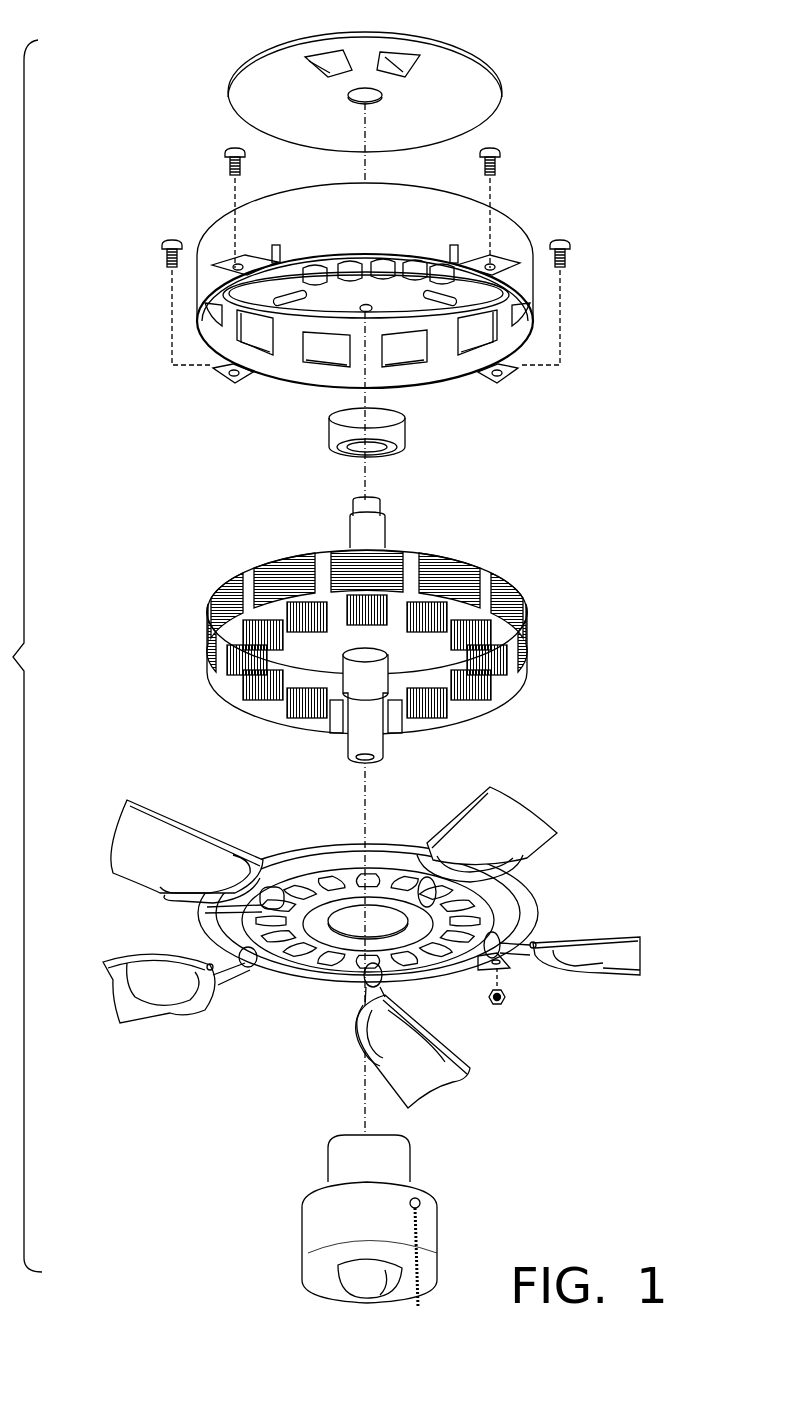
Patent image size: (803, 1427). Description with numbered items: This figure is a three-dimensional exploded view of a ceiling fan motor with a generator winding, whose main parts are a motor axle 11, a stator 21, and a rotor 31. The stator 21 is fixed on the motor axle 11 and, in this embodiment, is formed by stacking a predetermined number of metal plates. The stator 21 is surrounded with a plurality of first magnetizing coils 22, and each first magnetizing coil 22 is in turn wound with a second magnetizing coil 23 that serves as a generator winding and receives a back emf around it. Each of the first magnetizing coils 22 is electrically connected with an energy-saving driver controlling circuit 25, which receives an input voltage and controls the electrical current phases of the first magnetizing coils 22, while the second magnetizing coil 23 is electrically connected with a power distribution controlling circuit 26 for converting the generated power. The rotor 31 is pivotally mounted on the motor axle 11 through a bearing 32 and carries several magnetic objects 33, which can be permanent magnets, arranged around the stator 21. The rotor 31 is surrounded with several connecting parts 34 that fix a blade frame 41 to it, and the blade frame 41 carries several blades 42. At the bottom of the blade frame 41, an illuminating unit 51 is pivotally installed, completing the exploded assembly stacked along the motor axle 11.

The motor axle 11 is at (388, 531).
The stator 21 is at (503, 579).
The first magnetizing coils 22 is at (208, 609).
The second magnetizing coil 23 is at (222, 650).
The energy-saving driver controlling circuit 25 is at (310, 56).
The power distribution controlling circuit 26 is at (417, 60).
The rotor 31 is at (512, 222).
The bearing 32 is at (407, 428).
The magnetic objects 33 is at (263, 357).
The connecting parts 34 is at (216, 381).
The blade frame 41 is at (540, 905).
The blades 42 is at (623, 968).
The illuminating unit 51 is at (350, 1290).